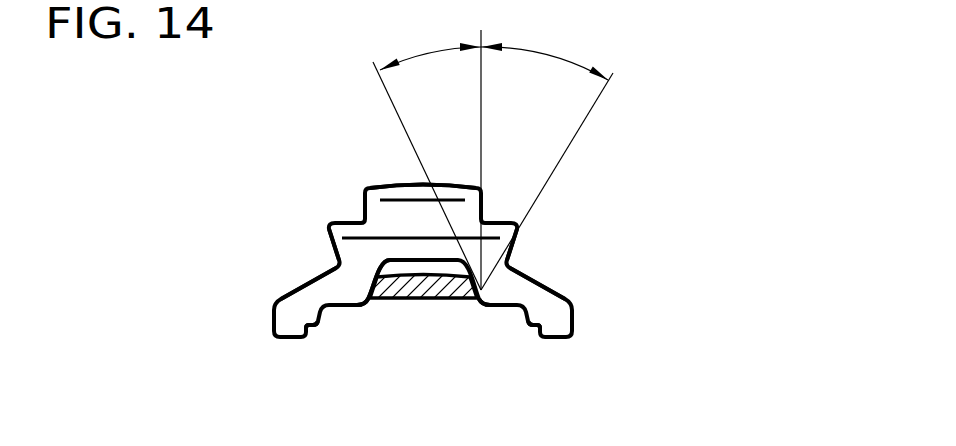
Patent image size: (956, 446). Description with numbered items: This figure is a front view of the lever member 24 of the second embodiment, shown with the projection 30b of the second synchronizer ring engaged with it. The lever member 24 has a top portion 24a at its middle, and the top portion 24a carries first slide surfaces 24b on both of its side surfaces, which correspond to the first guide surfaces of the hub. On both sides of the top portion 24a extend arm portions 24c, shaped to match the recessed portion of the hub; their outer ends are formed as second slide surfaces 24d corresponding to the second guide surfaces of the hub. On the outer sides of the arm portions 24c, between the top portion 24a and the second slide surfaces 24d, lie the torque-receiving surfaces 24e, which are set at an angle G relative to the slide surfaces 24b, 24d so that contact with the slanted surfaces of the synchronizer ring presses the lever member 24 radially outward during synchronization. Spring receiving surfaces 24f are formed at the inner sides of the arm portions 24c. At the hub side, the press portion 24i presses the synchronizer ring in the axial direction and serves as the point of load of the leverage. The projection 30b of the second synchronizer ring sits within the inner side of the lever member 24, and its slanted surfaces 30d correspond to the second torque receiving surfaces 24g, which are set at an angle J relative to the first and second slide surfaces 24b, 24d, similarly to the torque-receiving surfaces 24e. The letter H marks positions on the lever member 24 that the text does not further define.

The lever member 24 is at (383, 210).
The top portion 24a is at (390, 196).
The first slide surface 24b is at (360, 220).
The arm portion 24c is at (322, 290).
The second slide surface 24d is at (273, 318).
The torque-receiving surface 24e is at (320, 255).
The spring receiving surface 24f is at (322, 327).
The second torque receiving surface 24g is at (379, 300).
The press portion 24i is at (340, 223).
The projection 30b is at (430, 288).
The slanted surface 30d is at (361, 288).
The reference position H is at (355, 283).
The angle J is at (427, 160).
The angle G is at (547, 165).